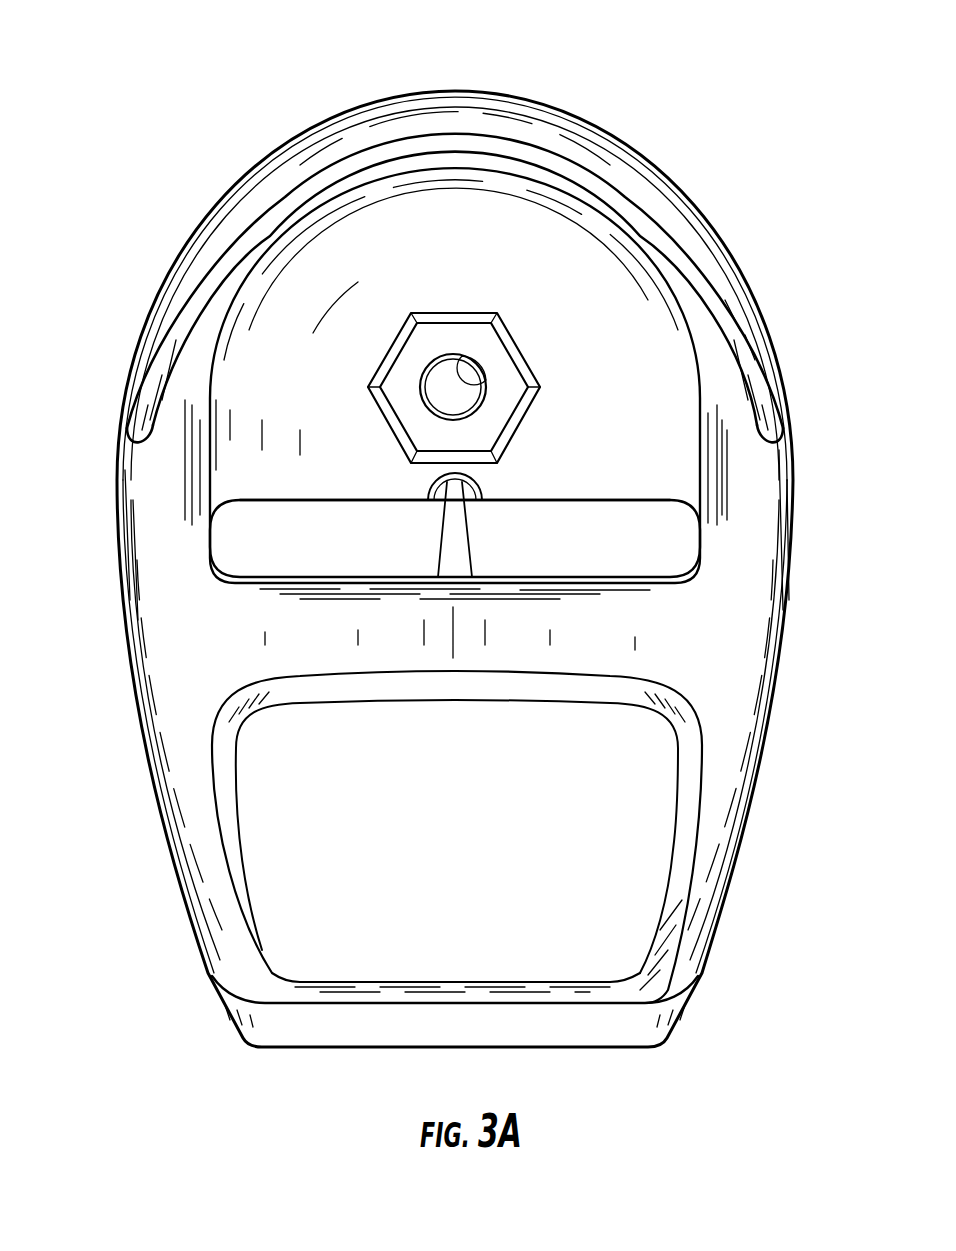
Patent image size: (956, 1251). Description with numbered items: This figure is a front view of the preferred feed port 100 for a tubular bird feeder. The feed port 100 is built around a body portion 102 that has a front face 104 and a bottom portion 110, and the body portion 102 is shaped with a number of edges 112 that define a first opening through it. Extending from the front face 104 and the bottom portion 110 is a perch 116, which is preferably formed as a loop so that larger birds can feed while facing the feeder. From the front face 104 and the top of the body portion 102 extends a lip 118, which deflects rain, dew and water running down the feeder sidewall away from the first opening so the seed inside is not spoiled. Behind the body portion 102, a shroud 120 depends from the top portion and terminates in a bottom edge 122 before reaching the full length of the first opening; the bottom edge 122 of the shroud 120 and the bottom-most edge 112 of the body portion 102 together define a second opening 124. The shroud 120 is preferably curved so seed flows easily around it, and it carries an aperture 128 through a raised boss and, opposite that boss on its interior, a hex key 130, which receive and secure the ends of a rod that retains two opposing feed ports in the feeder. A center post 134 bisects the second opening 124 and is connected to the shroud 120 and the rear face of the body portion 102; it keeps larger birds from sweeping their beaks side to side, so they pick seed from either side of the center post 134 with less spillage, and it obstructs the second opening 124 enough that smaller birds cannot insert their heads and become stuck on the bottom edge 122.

The feed port 100 is at (305, 50).
The body portion 102 is at (117, 577).
The front face 104 is at (372, 652).
The bottom portion 110 is at (457, 703).
The edges 112 is at (384, 175).
The perch 116 is at (343, 1025).
The lip 118 is at (262, 200).
The shroud 120 is at (270, 320).
The bottom edge 122 is at (265, 502).
The second opening 124 is at (520, 533).
The aperture 128 is at (490, 377).
The hex key 130 is at (412, 357).
The center post 134 is at (443, 525).